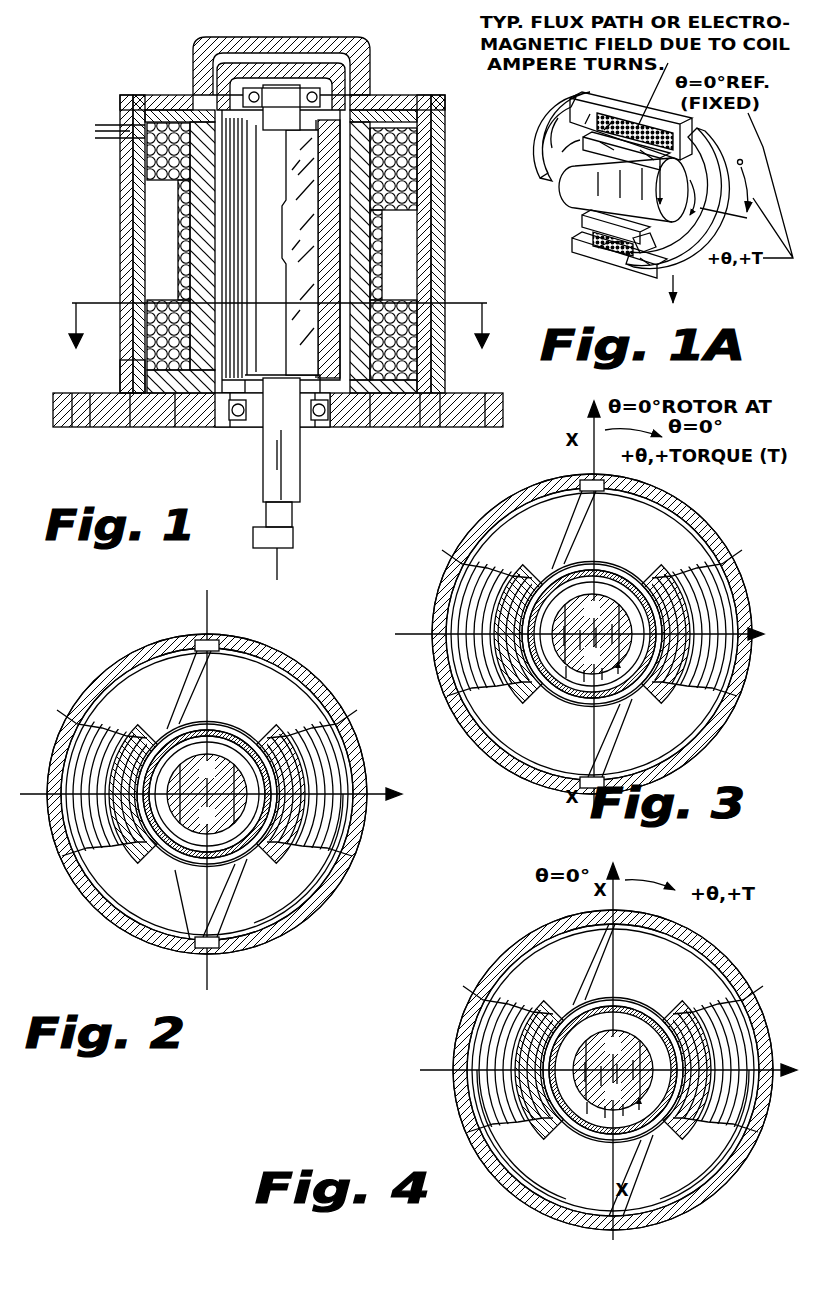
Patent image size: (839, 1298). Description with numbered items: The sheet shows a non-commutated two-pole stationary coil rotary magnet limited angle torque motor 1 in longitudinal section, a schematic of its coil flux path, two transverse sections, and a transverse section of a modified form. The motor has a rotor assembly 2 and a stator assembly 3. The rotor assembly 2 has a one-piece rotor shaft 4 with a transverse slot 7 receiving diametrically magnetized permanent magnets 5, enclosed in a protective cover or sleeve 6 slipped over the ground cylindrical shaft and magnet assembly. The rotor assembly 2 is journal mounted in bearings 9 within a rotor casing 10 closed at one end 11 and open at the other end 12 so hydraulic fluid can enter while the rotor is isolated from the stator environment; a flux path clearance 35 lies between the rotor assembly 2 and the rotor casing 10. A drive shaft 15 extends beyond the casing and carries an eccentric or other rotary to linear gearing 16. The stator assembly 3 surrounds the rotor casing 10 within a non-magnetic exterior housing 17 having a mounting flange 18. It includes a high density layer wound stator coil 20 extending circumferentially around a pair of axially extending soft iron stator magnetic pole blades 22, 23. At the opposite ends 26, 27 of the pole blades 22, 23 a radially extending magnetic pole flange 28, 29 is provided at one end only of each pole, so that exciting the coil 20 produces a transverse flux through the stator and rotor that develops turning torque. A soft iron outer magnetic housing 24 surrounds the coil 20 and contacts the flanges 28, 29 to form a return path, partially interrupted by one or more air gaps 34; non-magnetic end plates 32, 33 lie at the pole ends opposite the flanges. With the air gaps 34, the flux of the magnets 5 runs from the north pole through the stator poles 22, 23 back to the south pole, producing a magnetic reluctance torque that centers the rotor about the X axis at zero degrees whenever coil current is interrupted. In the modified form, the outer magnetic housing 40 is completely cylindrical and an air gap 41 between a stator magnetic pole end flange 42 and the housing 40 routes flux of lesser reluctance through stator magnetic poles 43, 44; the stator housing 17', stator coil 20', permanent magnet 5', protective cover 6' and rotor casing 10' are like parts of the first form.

In FIG. 1, the torque motor 1 is at (118, 222).
In FIG. 2, the torque motor 1 is at (112, 648).
In FIG. 3, the torque motor 1 is at (476, 515).
In FIG. 1, the rotor assembly 2 is at (225, 270).
In FIG. 2, the rotor assembly 2 is at (172, 740).
In FIG. 3, the rotor assembly 2 is at (558, 578).
In FIG. 1, the stator assembly 3 is at (135, 247).
In FIG. 2, the stator assembly 3 is at (85, 700).
In FIG. 3, the stator assembly 3 is at (485, 578).
In FIG. 1, the rotor shaft 4 is at (215, 395).
In FIG. 2, the rotor shaft 4 is at (165, 770).
In FIG. 3, the rotor shaft 4 is at (540, 618).
In FIG. 1, the permanent magnets 5 is at (341, 252).
In FIG. 1A, the permanent magnets 5 is at (607, 190).
In FIG. 2, the permanent magnets 5 is at (207, 756).
In FIG. 3, the permanent magnets 5 is at (592, 598).
In FIG. 1, the protective cover or sleeve 6 is at (362, 249).
In FIG. 1A, the protective cover or sleeve 6 is at (623, 190).
In FIG. 2, the protective cover or sleeve 6 is at (207, 772).
In FIG. 3, the protective cover or sleeve 6 is at (592, 609).
In FIG. 1, the transverse slot 7 is at (323, 270).
In FIG. 2, the transverse slot 7 is at (297, 832).
In FIG. 3, the transverse slot 7 is at (655, 660).
In FIG. 1, the bearings 9 is at (305, 98).
In FIG. 1, the rotor casing 10 is at (314, 68).
In FIG. 2, the rotor casing 10 is at (207, 813).
In FIG. 3, the rotor casing 10 is at (531, 634).
In FIG. 1, the closed end 11 is at (200, 58).
In FIG. 1, the open end 12 is at (237, 420).
In FIG. 1, the drive shaft 15 is at (298, 479).
In FIG. 1, the rotary to linear gearing 16 is at (293, 538).
In FIG. 1, the exterior housing 17 is at (453, 238).
In FIG. 2, the exterior housing 17 is at (207, 778).
In FIG. 3, the exterior housing 17 is at (592, 634).
In FIG. 1, the mounting flange 18 is at (503, 410).
In FIG. 1, the stator coil 20 is at (123, 210).
In FIG. 1A, the stator coil 20 is at (614, 268).
In FIG. 2, the stator coil 20 is at (189, 794).
In FIG. 3, the stator coil 20 is at (550, 634).
In FIG. 1, the stator magnetic pole blade 22 is at (202, 205).
In FIG. 1A, the stator magnetic pole blade 22 is at (582, 222).
In FIG. 2, the stator magnetic pole blade 22 is at (160, 830).
In FIG. 3, the stator magnetic pole blade 22 is at (540, 668).
In FIG. 1, the stator magnetic pole blade 23 is at (362, 170).
In FIG. 1A, the stator magnetic pole blade 23 is at (570, 118).
In FIG. 2, the stator magnetic pole blade 23 is at (283, 770).
In FIG. 3, the stator magnetic pole blade 23 is at (670, 592).
In FIG. 1, the outer magnetic housing 24 is at (137, 287).
In FIG. 1A, the outer magnetic housing 24 is at (690, 268).
In FIG. 2, the outer magnetic housing 24 is at (160, 658).
In FIG. 3, the outer magnetic housing 24 is at (522, 740).
In FIG. 1, the end of stator magnetic pole blade 26 is at (165, 395).
In FIG. 1, the end of stator magnetic pole blade 27 is at (372, 118).
In FIG. 1, the stator magnetic pole flange 28 is at (126, 395).
In FIG. 1A, the stator magnetic pole flange 28 is at (646, 264).
In FIG. 2, the stator magnetic pole flange 28 is at (180, 913).
In FIG. 1, the stator magnetic pole flange 29 is at (412, 118).
In FIG. 1A, the stator magnetic pole flange 29 is at (548, 142).
In FIG. 1, the end plate 32 is at (165, 118).
In FIG. 2, the end plate 33 is at (270, 910).
In FIG. 4, the end plate 33 is at (670, 1180).
In FIG. 2, the air gaps 34 is at (197, 637).
In FIG. 3, the air gaps 34 is at (580, 770).
In FIG. 1, the flux path clearance 35 is at (348, 193).
In FIG. 2, the flux path clearance 35 is at (248, 840).
In FIG. 4, the outer magnetic housing 40 is at (735, 985).
In FIG. 4, the air gap 41 is at (540, 950).
In FIG. 4, the stator magnetic pole end flange 42 is at (560, 1175).
In FIG. 4, the stator magnetic pole 43 is at (545, 1125).
In FIG. 4, the stator magnetic pole 44 is at (675, 1125).
In FIG. 4, the stator housing 17' is at (613, 1070).
In FIG. 4, the stator coil 20' is at (571, 1070).
In FIG. 4, the permanent magnet 5' is at (605, 1038).
In FIG. 4, the protective cover 6' is at (613, 1090).
In FIG. 4, the rotor casing 10' is at (613, 1049).